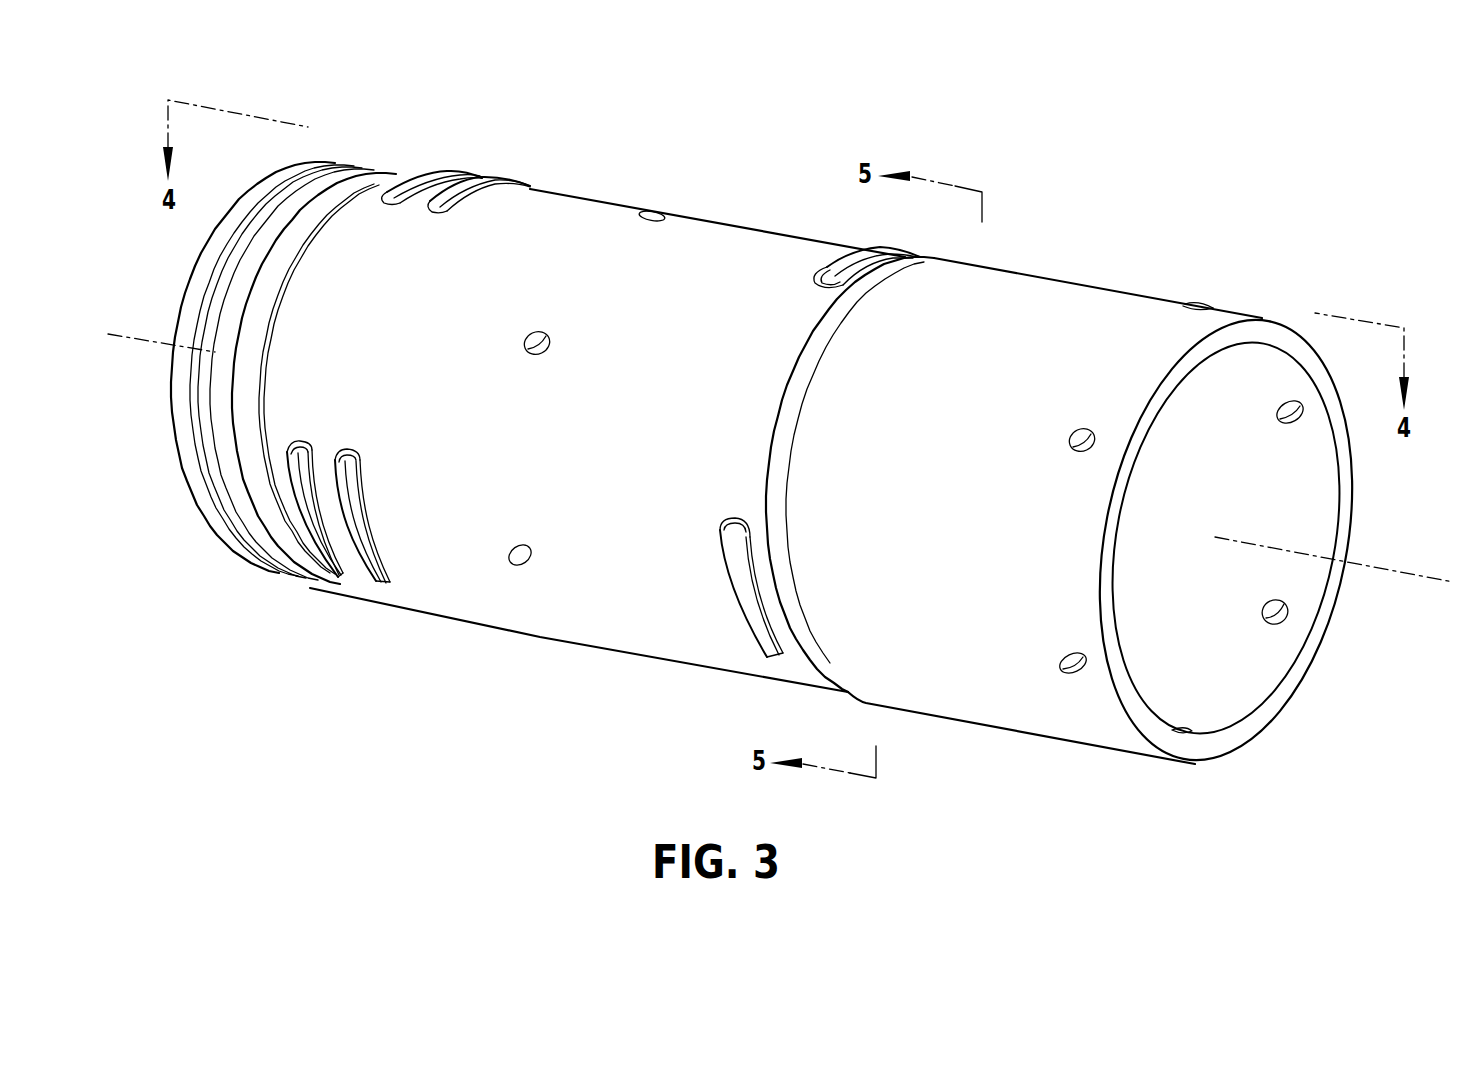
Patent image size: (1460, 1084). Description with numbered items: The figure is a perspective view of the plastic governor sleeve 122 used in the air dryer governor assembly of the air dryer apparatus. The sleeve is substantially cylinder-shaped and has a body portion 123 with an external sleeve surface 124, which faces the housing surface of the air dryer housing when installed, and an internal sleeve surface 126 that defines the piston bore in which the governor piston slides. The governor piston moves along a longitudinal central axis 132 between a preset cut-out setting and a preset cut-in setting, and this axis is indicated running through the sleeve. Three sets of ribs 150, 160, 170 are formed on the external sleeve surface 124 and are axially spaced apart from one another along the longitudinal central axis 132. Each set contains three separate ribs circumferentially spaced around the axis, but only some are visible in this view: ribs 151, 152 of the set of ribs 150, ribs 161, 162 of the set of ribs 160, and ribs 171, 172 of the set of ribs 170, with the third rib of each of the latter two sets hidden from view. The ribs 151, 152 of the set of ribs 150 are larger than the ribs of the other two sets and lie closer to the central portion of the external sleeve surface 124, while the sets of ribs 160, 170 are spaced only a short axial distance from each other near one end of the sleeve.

The plastic governor sleeve 122 is at (980, 125).
The body portion 123 is at (1095, 316).
The external sleeve surface 124 is at (597, 202).
The internal sleeve surface 126 is at (1250, 687).
The longitudinal central axis 132 is at (143, 343).
The set of ribs 150 is at (863, 232).
The rib 151 is at (834, 266).
The rib 152 is at (745, 610).
The set of ribs 160 is at (511, 157).
The rib 161 is at (463, 188).
The rib 162 is at (365, 552).
The set of ribs 170 is at (447, 152).
The rib 171 is at (402, 184).
The rib 172 is at (308, 508).